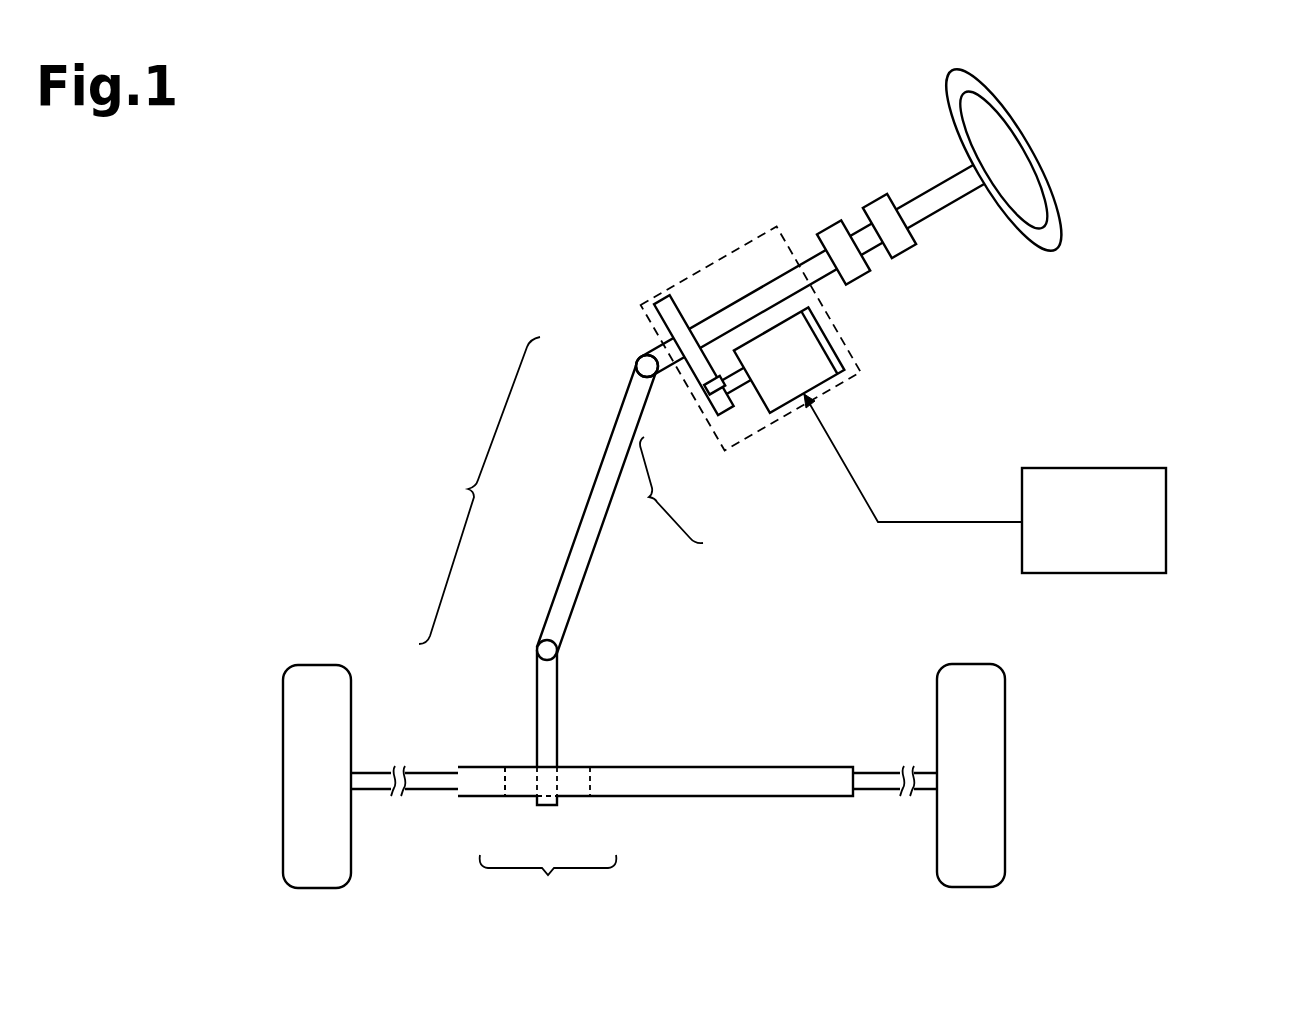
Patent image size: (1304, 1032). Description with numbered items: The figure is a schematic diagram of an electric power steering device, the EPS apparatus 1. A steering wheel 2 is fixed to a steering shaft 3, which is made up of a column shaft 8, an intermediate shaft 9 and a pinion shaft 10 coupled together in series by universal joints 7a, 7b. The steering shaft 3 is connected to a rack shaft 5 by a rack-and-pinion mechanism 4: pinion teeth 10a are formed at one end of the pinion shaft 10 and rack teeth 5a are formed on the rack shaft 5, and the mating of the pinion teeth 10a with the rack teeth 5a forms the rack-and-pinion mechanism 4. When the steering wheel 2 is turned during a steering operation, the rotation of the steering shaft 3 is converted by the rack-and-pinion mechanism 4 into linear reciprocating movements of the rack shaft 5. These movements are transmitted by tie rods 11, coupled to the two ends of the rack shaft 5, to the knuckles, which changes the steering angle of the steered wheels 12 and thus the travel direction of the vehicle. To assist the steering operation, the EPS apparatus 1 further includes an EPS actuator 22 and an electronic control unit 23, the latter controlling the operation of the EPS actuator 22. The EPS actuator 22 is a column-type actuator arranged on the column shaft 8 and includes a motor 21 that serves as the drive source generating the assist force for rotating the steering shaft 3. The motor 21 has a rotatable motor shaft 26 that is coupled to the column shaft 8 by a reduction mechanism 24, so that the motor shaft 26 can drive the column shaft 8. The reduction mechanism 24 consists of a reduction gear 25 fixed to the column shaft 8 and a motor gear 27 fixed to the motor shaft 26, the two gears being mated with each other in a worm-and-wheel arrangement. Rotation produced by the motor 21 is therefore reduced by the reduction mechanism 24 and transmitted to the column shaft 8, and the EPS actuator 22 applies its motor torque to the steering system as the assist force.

The EPS apparatus 1 is at (1162, 92).
The steering wheel 2 is at (1058, 207).
The steering shaft 3 is at (479, 490).
The rack-and-pinion mechanism 4 is at (548, 885).
The rack shaft 5 is at (481, 767).
The rack teeth 5a is at (516, 790).
The universal joint 7a is at (637, 372).
The universal joint 7b is at (544, 640).
The column shaft 8 is at (637, 358).
The intermediate shaft 9 is at (592, 500).
The pinion shaft 10 is at (536, 690).
The pinion teeth 10a is at (556, 780).
The tie rods 11 is at (373, 793).
The steered wheels 12 is at (352, 706).
The motor 21 is at (828, 340).
The EPS actuator 22 is at (725, 253).
The electronic control unit 23 is at (1168, 522).
The reduction mechanism 24 is at (658, 490).
The reduction gear 25 is at (700, 372).
The motor shaft 26 is at (741, 392).
The motor gear 27 is at (708, 398).